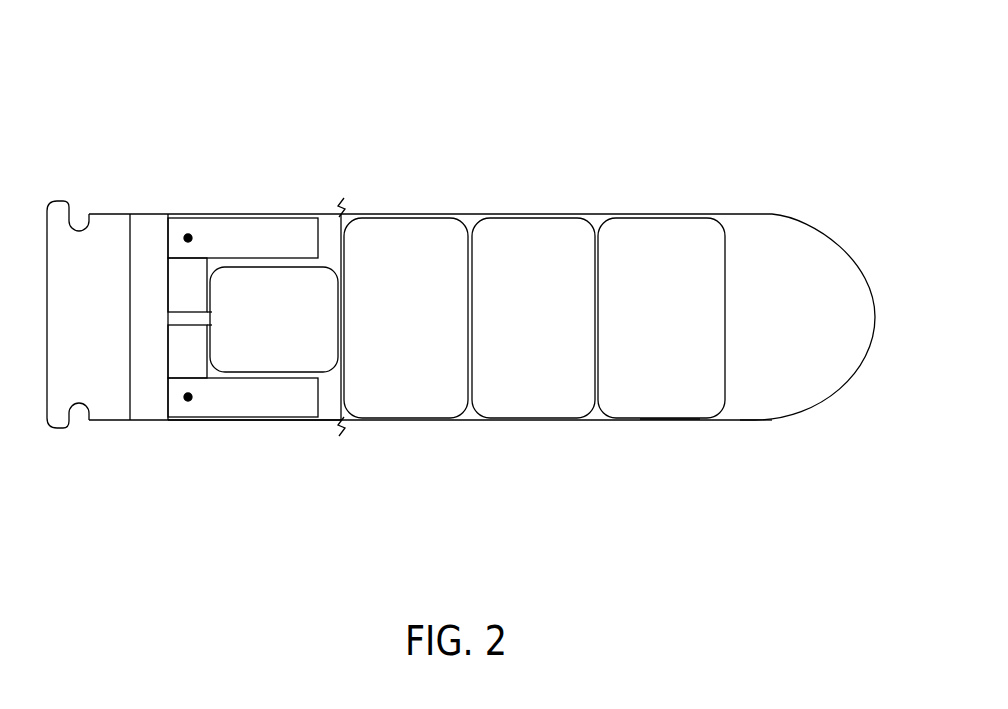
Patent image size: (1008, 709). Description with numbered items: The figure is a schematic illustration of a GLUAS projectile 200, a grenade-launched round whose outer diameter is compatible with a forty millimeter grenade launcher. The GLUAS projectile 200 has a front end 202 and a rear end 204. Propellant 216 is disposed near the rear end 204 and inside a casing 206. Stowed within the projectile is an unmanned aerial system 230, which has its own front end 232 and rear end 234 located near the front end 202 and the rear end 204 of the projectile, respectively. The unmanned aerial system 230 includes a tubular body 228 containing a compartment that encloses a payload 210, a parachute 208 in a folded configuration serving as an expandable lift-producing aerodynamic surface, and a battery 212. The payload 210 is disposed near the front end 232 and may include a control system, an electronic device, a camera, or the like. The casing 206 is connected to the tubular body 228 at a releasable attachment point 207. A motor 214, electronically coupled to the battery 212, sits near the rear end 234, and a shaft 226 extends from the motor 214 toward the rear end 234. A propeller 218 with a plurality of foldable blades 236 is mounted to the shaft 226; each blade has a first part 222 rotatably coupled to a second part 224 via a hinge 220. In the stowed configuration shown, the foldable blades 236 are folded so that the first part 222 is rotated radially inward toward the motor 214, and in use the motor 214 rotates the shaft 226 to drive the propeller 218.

The GLUAS projectile 200 is at (461, 283).
The front end 202 is at (833, 448).
The rear end 204 is at (73, 438).
The casing 206 is at (320, 192).
The releasable attachment point 207 is at (343, 202).
The parachute 208 is at (518, 332).
The payload 210 is at (647, 332).
The battery 212 is at (388, 332).
The motor 214 is at (260, 332).
The propellant 216 is at (105, 233).
The propeller 218 is at (245, 231).
The hinge 220 is at (187, 403).
The first part 222 is at (272, 400).
The second part 224 is at (182, 353).
The shaft 226 is at (193, 318).
The tubular body 228 is at (662, 421).
The unmanned aerial system 230 is at (260, 103).
The front end 232 is at (777, 462).
The rear end 234 is at (247, 497).
The foldable blades 236 is at (289, 231).